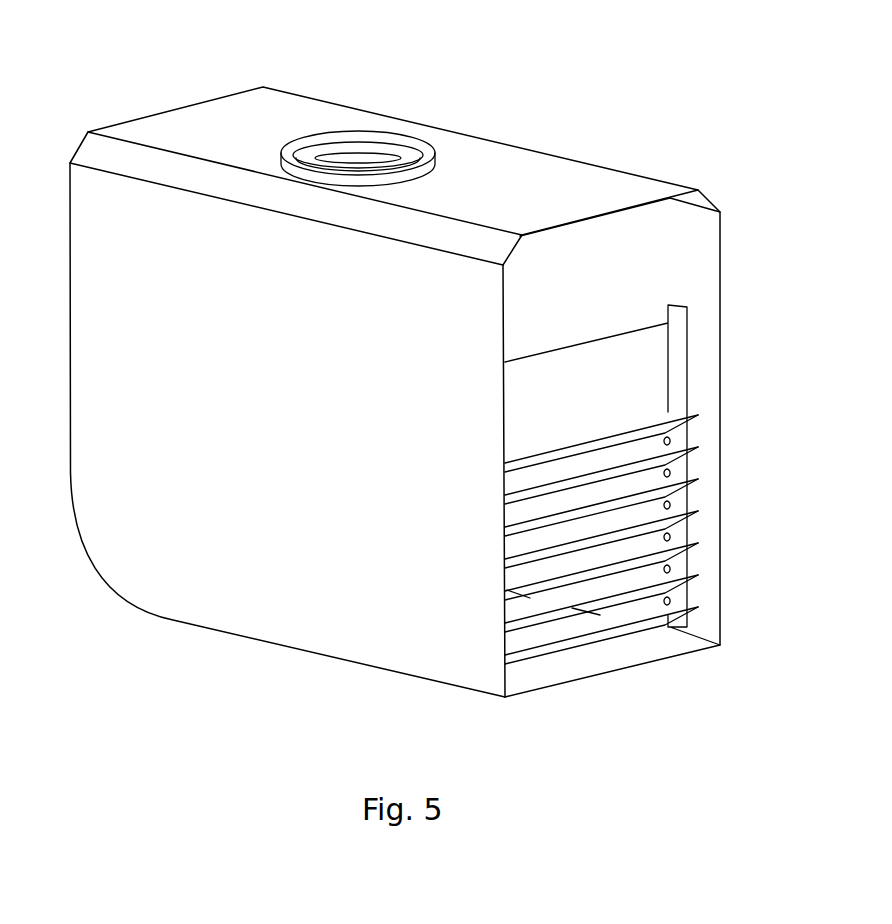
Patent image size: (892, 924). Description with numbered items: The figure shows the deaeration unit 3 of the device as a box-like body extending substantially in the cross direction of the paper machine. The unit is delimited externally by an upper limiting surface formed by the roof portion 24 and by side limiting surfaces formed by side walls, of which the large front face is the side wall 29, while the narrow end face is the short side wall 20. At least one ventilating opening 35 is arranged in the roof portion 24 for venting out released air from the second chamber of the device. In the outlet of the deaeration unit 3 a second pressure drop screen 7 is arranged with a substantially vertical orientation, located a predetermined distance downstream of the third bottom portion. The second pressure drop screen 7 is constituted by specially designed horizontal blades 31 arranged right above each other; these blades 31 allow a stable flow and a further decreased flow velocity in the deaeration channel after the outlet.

The deaeration unit 3 is at (323, 86).
The ventilating opening 35 is at (380, 150).
The roof portion 24 is at (547, 172).
The side wall 29 is at (303, 418).
The short side wall 20 is at (695, 391).
The horizontal blades 31 is at (662, 512).
The second pressure drop screen 7 is at (625, 617).